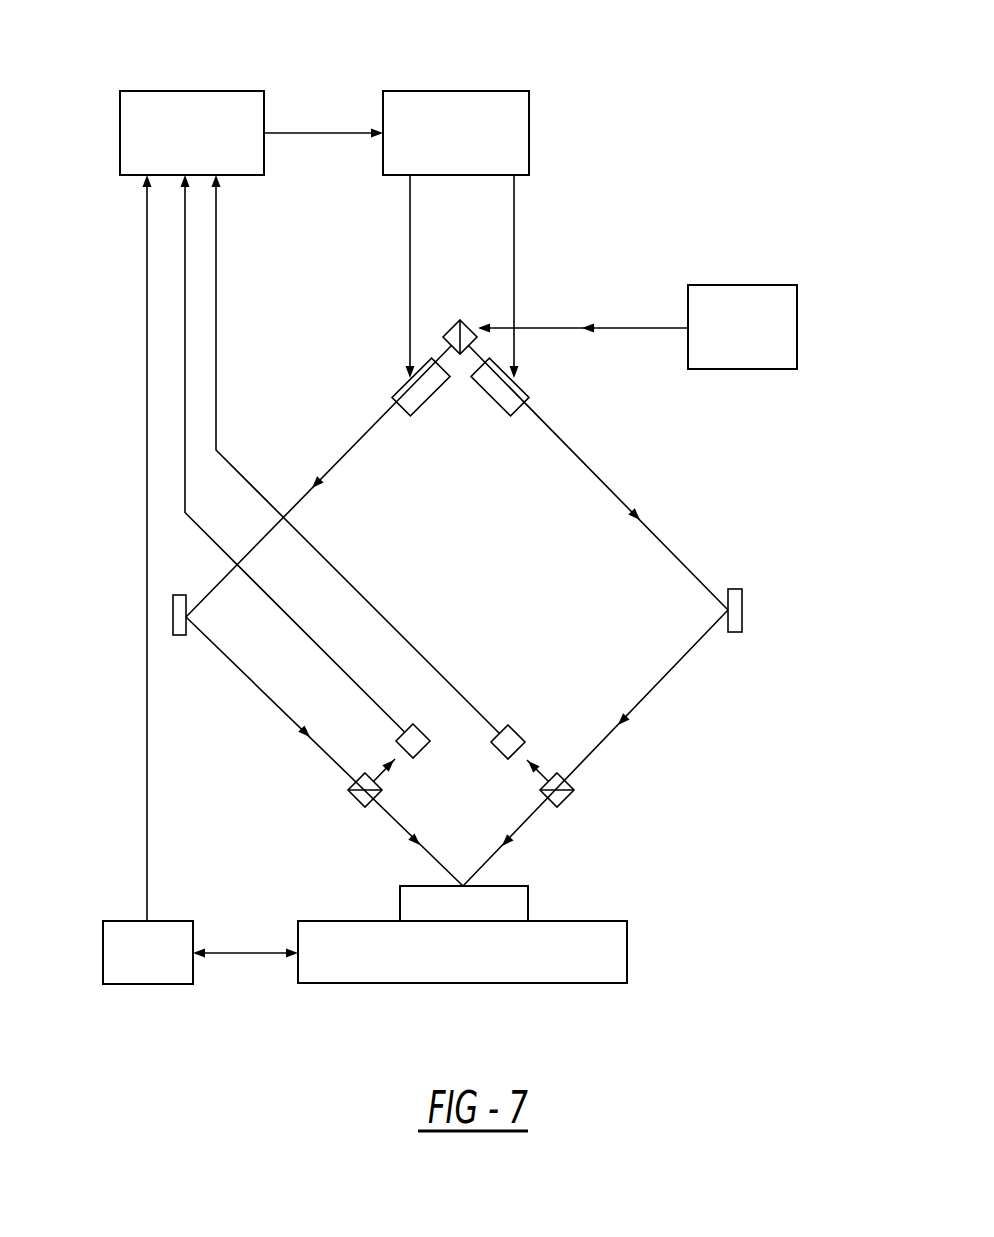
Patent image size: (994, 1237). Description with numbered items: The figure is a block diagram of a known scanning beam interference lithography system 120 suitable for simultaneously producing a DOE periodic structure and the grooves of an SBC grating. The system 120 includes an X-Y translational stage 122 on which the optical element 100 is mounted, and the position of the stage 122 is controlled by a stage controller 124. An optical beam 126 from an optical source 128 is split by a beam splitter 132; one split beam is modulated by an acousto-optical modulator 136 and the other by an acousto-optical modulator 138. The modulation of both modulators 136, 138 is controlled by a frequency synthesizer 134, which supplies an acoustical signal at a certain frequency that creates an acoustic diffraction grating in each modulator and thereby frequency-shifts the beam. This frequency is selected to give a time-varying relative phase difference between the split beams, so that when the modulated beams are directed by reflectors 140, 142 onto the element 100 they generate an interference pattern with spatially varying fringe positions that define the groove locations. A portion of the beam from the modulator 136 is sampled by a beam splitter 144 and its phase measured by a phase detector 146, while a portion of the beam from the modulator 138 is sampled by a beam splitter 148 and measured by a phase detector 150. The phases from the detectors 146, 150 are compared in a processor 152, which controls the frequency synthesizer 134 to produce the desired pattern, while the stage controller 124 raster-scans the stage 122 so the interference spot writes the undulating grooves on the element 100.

The optical element 100 is at (400, 903).
The SBIL system 120 is at (697, 46).
The X-Y translational stage 122 is at (627, 953).
The stage controller 124 is at (103, 945).
The optical beam 126 is at (612, 328).
The optical source 128 is at (740, 285).
The beam splitter 132 is at (450, 331).
The frequency synthesizer 134 is at (452, 91).
The acousto-optical modulator 136 is at (397, 396).
The acousto-optical modulator 138 is at (500, 412).
The reflector 140 is at (178, 637).
The reflector 142 is at (742, 610).
The beam splitter 144 is at (350, 797).
The phase detector 146 is at (423, 751).
The beam splitter 148 is at (566, 800).
The phase detector 150 is at (519, 732).
The processor 152 is at (180, 91).